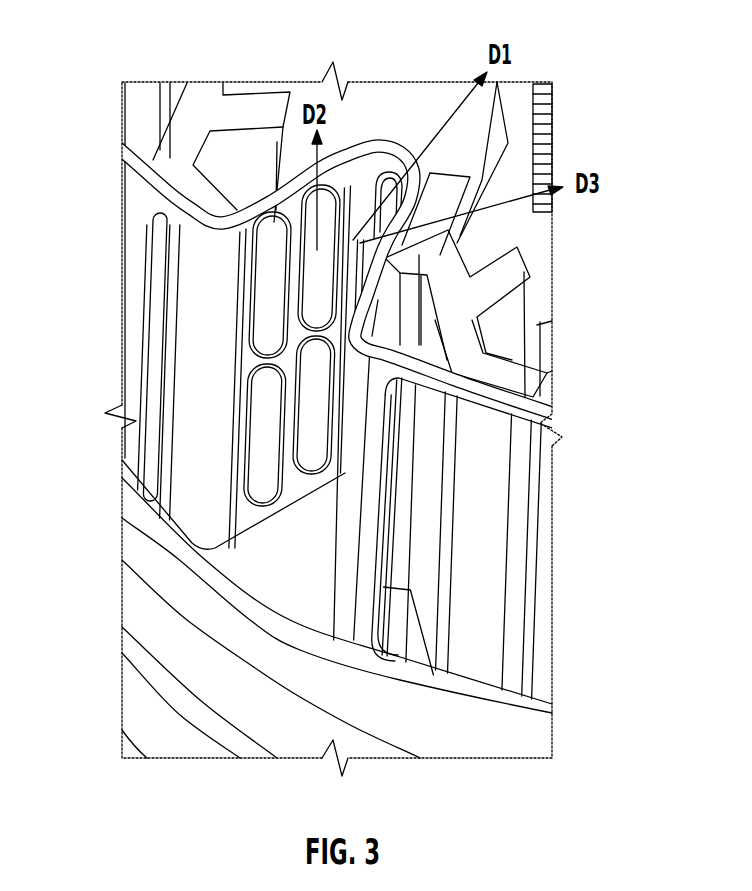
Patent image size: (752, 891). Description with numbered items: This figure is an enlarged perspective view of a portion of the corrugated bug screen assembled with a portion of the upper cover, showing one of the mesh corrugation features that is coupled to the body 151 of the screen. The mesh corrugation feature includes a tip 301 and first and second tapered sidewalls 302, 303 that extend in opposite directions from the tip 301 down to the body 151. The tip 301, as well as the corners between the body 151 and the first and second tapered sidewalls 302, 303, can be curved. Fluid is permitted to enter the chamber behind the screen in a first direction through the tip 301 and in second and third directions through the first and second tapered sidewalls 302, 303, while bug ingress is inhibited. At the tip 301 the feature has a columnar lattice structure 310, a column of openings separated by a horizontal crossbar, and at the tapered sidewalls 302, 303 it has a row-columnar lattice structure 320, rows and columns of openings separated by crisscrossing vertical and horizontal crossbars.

The tip 301 is at (363, 180).
The first tapered sidewall 302 is at (280, 340).
The second tapered sidewall 303 is at (362, 289).
The columnar lattice structure 310 is at (422, 204).
The row-columnar lattice structure 320 is at (340, 520).
The body 151 is at (487, 702).